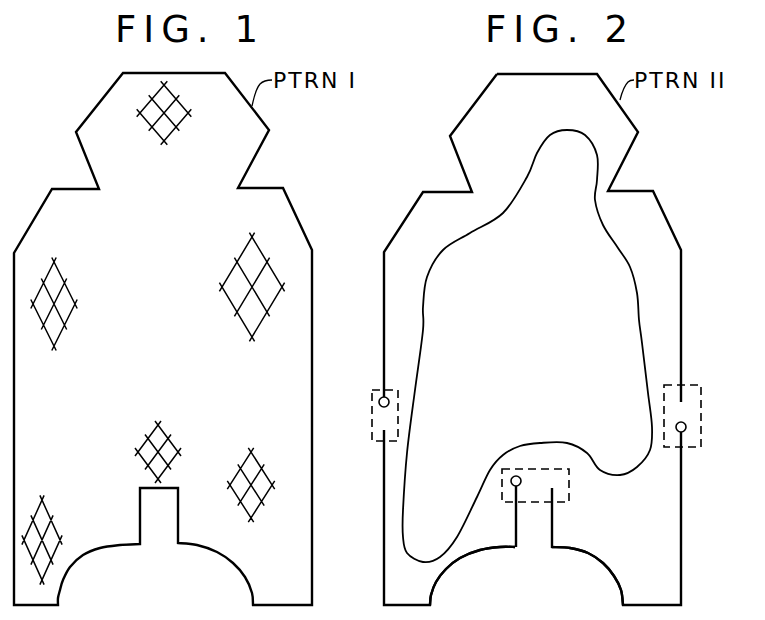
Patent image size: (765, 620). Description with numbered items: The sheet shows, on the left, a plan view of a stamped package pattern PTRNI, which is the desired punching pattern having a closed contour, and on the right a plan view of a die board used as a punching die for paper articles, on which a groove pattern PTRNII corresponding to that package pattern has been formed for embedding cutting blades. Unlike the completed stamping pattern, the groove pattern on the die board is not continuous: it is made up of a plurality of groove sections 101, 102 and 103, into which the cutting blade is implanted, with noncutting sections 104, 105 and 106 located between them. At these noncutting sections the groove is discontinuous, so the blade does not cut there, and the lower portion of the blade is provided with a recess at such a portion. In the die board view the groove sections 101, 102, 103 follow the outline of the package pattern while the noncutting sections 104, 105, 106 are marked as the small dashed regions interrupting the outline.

The groove pattern section 101 is at (682, 266).
The groove pattern section 102 is at (610, 577).
The groove pattern section 103 is at (445, 578).
The noncutting section 104 is at (371, 441).
The noncutting section 105 is at (700, 443).
The noncutting section 106 is at (570, 488).